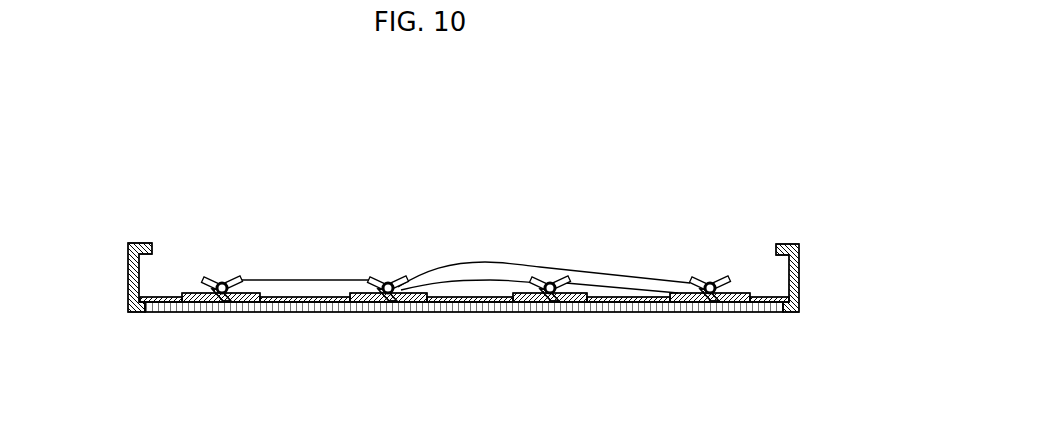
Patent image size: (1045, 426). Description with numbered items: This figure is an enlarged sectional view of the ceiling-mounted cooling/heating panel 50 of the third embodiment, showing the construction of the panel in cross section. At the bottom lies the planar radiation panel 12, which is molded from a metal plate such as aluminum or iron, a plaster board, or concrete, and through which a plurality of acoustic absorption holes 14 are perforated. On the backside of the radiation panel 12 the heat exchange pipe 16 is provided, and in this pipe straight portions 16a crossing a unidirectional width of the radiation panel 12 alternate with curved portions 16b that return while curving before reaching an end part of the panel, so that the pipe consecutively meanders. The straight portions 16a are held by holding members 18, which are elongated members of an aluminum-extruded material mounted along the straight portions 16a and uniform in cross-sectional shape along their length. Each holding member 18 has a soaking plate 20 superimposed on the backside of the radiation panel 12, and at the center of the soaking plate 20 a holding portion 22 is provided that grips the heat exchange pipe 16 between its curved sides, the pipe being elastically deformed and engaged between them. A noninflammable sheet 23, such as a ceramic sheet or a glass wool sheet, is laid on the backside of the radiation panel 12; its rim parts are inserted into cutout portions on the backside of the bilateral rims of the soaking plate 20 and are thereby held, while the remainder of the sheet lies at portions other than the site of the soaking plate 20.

The ceiling-mounted cooling/heating panel 50 is at (697, 171).
The radiation panel 12 is at (631, 313).
The acoustic absorption holes 14 is at (477, 313).
The heat exchange pipe 16 is at (222, 281).
The straight portions 16a is at (388, 279).
The curved portions 16b is at (437, 266).
The holding member 18 is at (190, 294).
The soaking plate 20 is at (258, 293).
The holding portion 22 is at (238, 282).
The noninflammable sheet 23 is at (619, 297).